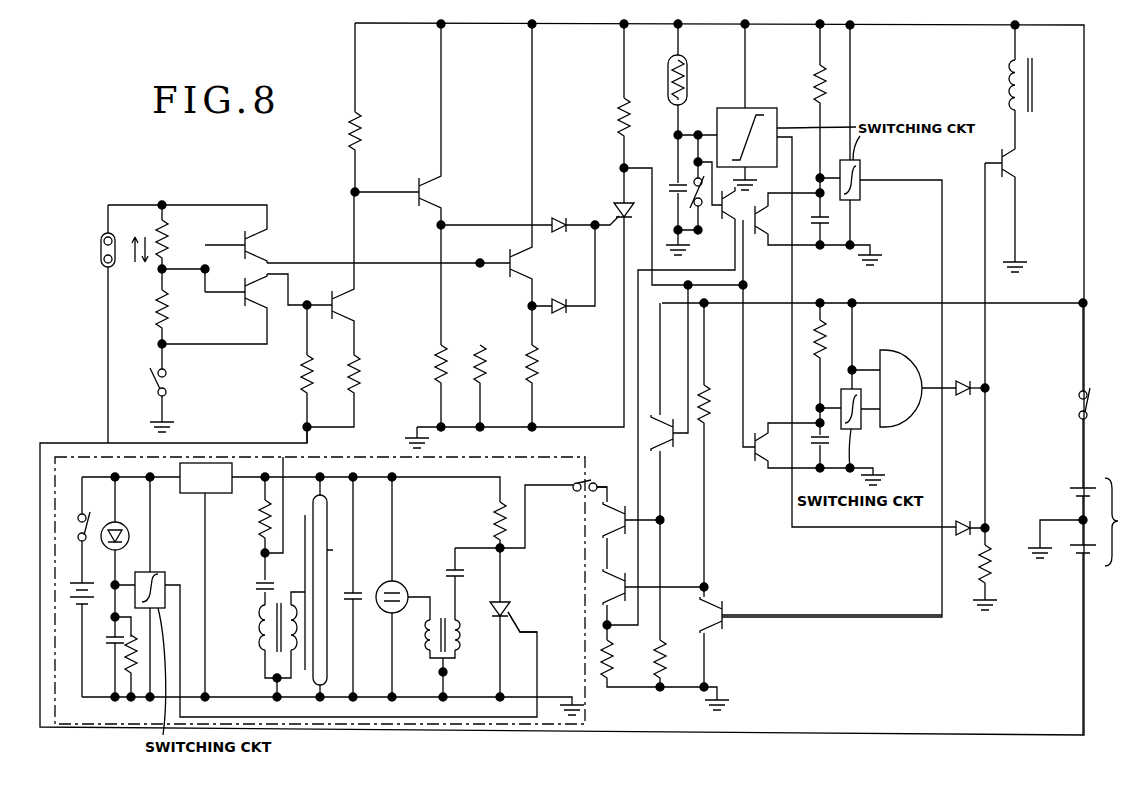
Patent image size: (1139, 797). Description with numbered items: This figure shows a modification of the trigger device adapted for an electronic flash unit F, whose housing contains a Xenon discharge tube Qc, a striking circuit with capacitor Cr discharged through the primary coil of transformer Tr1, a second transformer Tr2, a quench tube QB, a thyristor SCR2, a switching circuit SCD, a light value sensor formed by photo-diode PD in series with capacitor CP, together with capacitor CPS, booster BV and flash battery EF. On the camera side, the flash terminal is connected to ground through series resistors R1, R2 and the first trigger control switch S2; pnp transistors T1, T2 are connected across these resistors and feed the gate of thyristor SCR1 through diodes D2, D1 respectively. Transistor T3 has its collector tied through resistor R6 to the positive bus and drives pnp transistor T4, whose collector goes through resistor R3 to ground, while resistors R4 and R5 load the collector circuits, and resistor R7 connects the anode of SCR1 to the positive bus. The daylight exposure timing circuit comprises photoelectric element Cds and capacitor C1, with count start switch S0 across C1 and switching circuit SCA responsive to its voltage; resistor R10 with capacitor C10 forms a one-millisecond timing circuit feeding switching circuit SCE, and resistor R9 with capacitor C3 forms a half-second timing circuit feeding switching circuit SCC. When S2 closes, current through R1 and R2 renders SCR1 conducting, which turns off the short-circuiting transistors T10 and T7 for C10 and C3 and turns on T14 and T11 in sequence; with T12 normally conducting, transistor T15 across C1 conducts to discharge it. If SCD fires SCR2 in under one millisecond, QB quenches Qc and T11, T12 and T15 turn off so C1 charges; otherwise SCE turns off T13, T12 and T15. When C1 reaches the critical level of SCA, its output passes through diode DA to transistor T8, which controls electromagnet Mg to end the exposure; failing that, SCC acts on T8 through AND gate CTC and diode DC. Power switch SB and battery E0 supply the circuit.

The resistor R1 is at (173, 237).
The resistor R2 is at (173, 308).
The resistor R3 is at (428, 388).
The resistor R4 is at (469, 388).
The resistor R5 is at (520, 388).
The resistor R6 is at (384, 109).
The resistor R7 is at (635, 111).
The resistor R9 is at (810, 367).
The resistor R10 is at (808, 118).
The pnp transistor T1 is at (321, 259).
The pnp transistor T2 is at (247, 309).
The npn transistor T3 is at (332, 317).
The pnp transistor T4 is at (436, 182).
The npn transistor T7 is at (787, 445).
The transistor T8 is at (1011, 191).
The npn transistor T10 is at (812, 320).
The npn transistor T11 is at (623, 528).
The npn transistor T12 is at (658, 639).
The transistor T13 is at (812, 637).
The pnp transistor T14 is at (664, 486).
The npn transistor T15 is at (674, 393).
The diode D1 is at (530, 215).
The diode D2 is at (563, 269).
The diode DC is at (970, 377).
The diode DA is at (974, 565).
The thyristor SCR1 is at (666, 228).
The thyristor SCR2 is at (522, 649).
The photoelectric element Cds is at (694, 101).
The timing capacitor C1 is at (672, 216).
The timing capacitor C3 is at (848, 461).
The timing capacitor C10 is at (811, 231).
The capacitor Cr is at (260, 531).
The capacitor CPS is at (443, 584).
The capacitor CP is at (113, 641).
The switching circuit SCA is at (836, 273).
The switching circuit SCE is at (861, 192).
The switching circuit SCC is at (846, 392).
The switching circuit SCD is at (326, 606).
The count start switch S0 is at (697, 182).
The first trigger control switch S2 is at (170, 388).
The power switch SB is at (1075, 395).
The electromagnet Mg is at (1035, 66).
The AND gate CTC is at (896, 358).
The power source battery E0 is at (1083, 606).
The flash unit F is at (544, 462).
The booster voltage circuit BV is at (206, 580).
The photo-diode PD is at (121, 533).
The flash battery EF is at (93, 640).
The transformer Tr1 is at (270, 606).
The transformer Tr2 is at (456, 657).
The Xenon discharge tube Qc is at (334, 587).
The quench tube QB is at (399, 587).